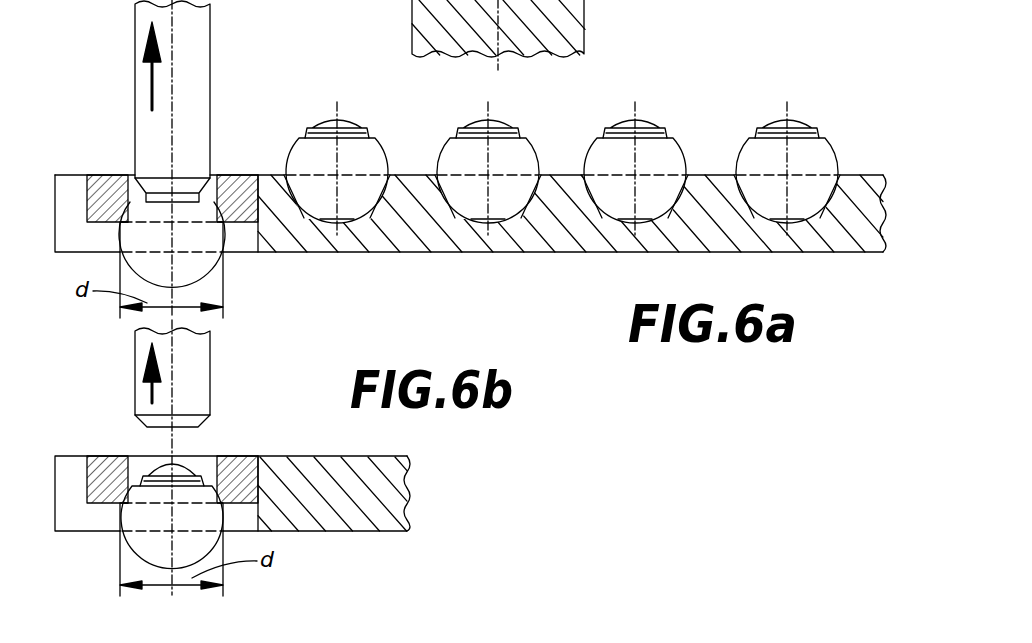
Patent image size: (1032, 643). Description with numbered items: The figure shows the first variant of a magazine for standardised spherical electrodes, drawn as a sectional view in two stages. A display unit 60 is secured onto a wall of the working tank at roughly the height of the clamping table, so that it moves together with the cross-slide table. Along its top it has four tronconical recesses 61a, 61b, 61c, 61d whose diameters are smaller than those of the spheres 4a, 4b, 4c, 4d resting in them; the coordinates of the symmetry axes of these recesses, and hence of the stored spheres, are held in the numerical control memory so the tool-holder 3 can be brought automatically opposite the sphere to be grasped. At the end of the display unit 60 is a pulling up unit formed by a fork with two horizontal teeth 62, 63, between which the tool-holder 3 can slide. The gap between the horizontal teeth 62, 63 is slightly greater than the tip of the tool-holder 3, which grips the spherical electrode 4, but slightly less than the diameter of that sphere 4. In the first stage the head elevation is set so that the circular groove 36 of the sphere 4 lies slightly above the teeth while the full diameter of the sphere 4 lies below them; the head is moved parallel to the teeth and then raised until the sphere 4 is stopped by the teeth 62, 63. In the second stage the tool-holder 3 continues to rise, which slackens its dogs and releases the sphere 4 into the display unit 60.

In FIG. 6A, the tool-holder 3 is at (192, 65).
In FIG. 6B, the tool-holder 3 is at (192, 388).
In FIG. 6A, the circular groove 36 is at (183, 193).
In FIG. 6A, the spherical electrode 4 is at (193, 262).
In FIG. 6A, the sphere 4a is at (363, 163).
In FIG. 6A, the sphere 4b is at (515, 160).
In FIG. 6A, the sphere 4c is at (665, 163).
In FIG. 6A, the sphere 4d is at (817, 158).
In FIG. 6A, the display unit 60 is at (850, 196).
In FIG. 6A, the tronconical recess 61a is at (353, 198).
In FIG. 6A, the tronconical recess 61b is at (503, 200).
In FIG. 6A, the tronconical recess 61c is at (650, 197).
In FIG. 6A, the tronconical recess 61d is at (800, 215).
In FIG. 6A, the horizontal tooth 62 is at (104, 174).
In FIG. 6A, the horizontal tooth 63 is at (247, 174).